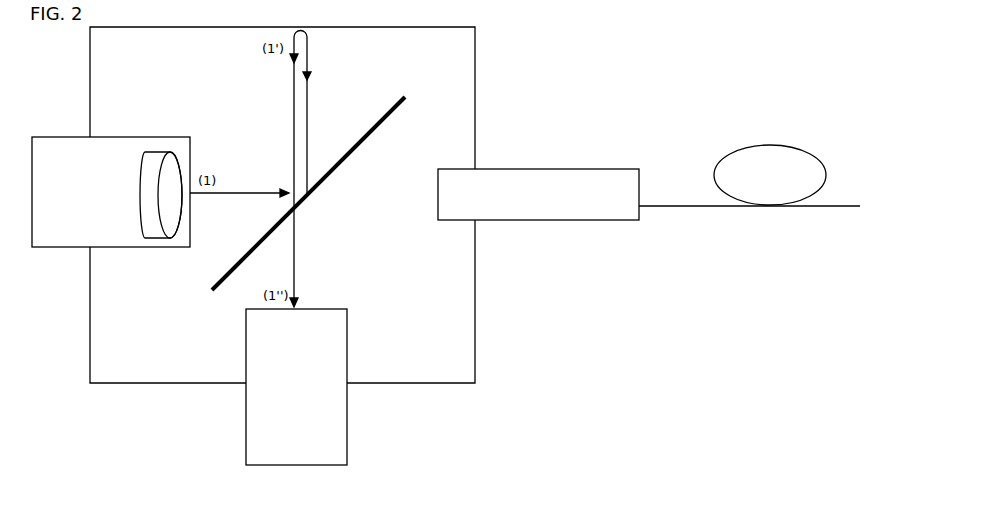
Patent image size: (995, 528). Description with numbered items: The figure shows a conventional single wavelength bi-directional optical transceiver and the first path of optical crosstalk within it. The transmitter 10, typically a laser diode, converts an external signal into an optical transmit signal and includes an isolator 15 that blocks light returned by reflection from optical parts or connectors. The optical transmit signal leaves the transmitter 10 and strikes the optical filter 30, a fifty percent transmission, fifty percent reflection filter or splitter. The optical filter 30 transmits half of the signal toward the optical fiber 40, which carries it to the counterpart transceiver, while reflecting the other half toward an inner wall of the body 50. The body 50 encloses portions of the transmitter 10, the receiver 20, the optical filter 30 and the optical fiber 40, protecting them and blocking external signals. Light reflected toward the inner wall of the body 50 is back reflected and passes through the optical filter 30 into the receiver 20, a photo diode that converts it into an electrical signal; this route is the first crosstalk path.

The transmitter 10 is at (97, 137).
The isolator 15 is at (160, 153).
The receiver 20 is at (347, 400).
The optical filter 30 is at (405, 111).
The optical fiber 40 is at (530, 169).
The body 50 is at (475, 312).